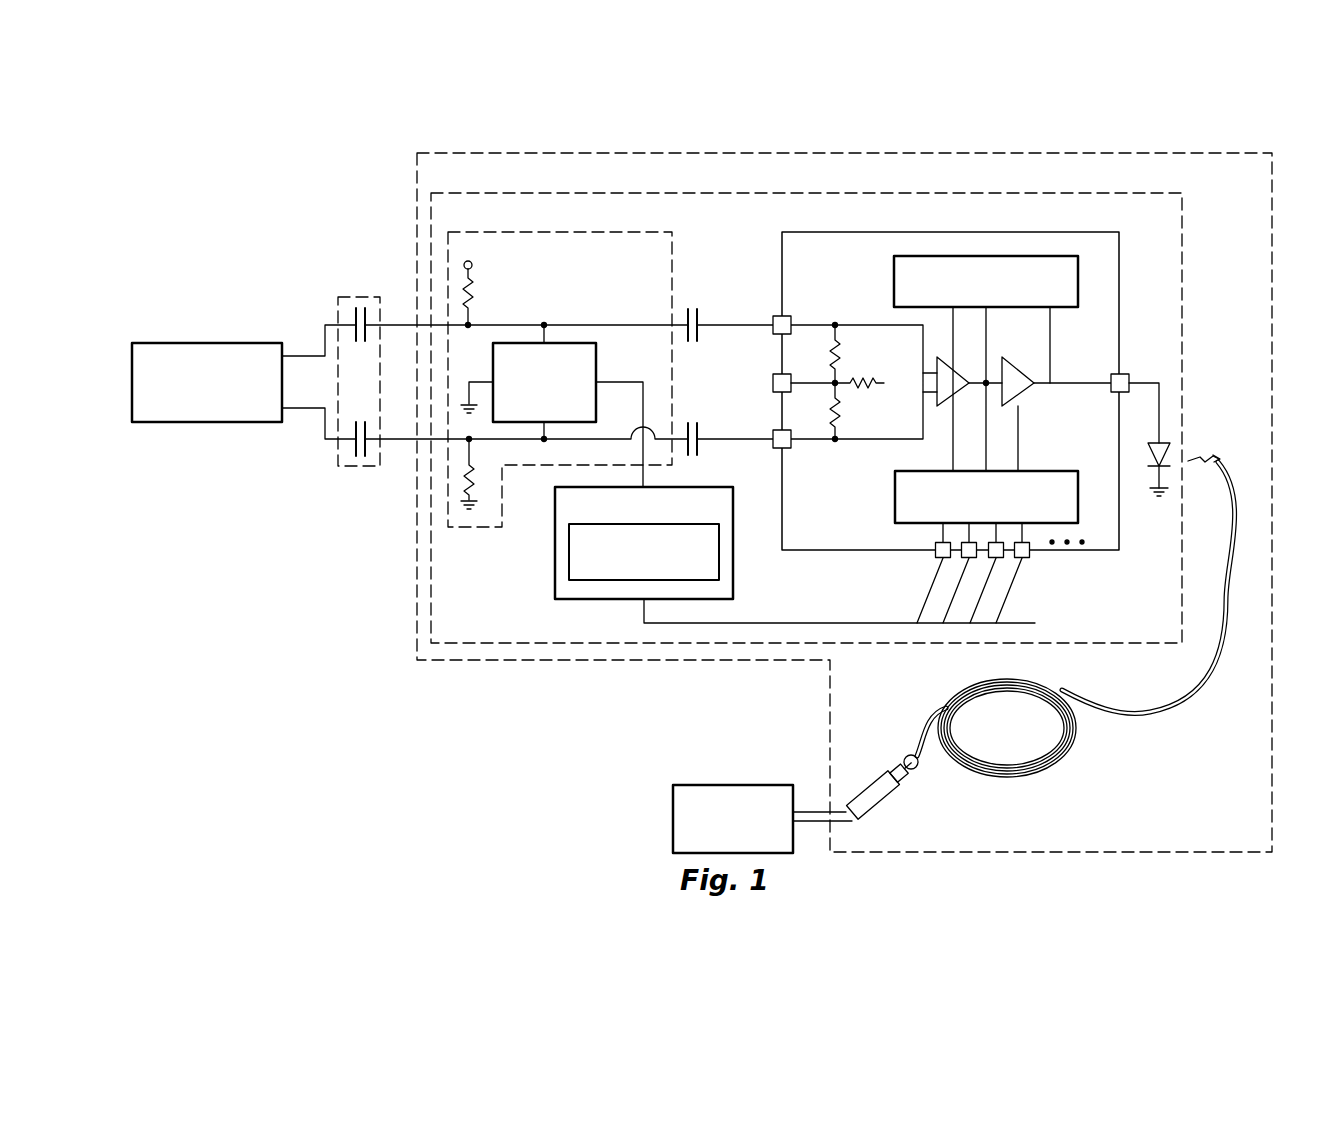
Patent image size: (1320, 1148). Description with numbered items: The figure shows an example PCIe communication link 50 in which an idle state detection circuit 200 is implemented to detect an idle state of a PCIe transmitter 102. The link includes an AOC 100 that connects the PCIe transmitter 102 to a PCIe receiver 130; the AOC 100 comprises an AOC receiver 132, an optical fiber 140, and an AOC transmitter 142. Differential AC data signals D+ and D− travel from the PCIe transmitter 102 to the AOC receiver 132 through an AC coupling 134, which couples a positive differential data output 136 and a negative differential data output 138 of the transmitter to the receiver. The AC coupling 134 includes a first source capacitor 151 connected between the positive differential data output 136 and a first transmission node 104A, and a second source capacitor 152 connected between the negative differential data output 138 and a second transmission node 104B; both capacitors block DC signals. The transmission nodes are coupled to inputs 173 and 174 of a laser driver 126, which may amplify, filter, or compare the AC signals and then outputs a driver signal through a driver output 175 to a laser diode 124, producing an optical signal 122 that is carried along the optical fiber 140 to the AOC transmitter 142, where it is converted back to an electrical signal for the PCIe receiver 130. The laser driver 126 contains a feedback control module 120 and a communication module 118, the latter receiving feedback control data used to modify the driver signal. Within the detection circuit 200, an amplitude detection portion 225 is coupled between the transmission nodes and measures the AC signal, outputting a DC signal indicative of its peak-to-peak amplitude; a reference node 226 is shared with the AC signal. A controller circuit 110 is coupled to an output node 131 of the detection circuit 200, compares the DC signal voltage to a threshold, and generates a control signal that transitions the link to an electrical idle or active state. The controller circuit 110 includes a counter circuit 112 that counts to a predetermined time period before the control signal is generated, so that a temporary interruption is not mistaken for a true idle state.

The PCIe communication link 50 is at (269, 176).
The AOC 100 is at (1258, 183).
The PCIe transmitter 102 is at (193, 396).
The first transmission node 104A is at (406, 323).
The second transmission node 104B is at (406, 442).
The controller circuit 110 is at (723, 515).
The counter circuit 112 is at (630, 572).
The communication module 118 is at (1031, 517).
The feedback control module 120 is at (1031, 301).
The optical signal 122 is at (1216, 457).
The laser diode 124 is at (1172, 452).
The laser driver 126 is at (821, 259).
The PCIe receiver 130 is at (719, 836).
The output node 131 is at (633, 381).
The AOC receiver 132 is at (473, 218).
The AC coupling 134 is at (352, 299).
The positive differential data output 136 is at (305, 356).
The negative differential data output 138 is at (305, 408).
The optical fiber 140 is at (1196, 691).
The AOC transmitter 142 is at (875, 803).
The first source capacitor 151 is at (352, 316).
The second source capacitor 152 is at (352, 455).
The input 173 is at (777, 318).
The input 174 is at (777, 432).
The driver output 175 is at (1114, 375).
The idle state detection circuit 200 is at (664, 261).
The amplitude detection portion 225 is at (530, 411).
The reference node 226 is at (462, 412).